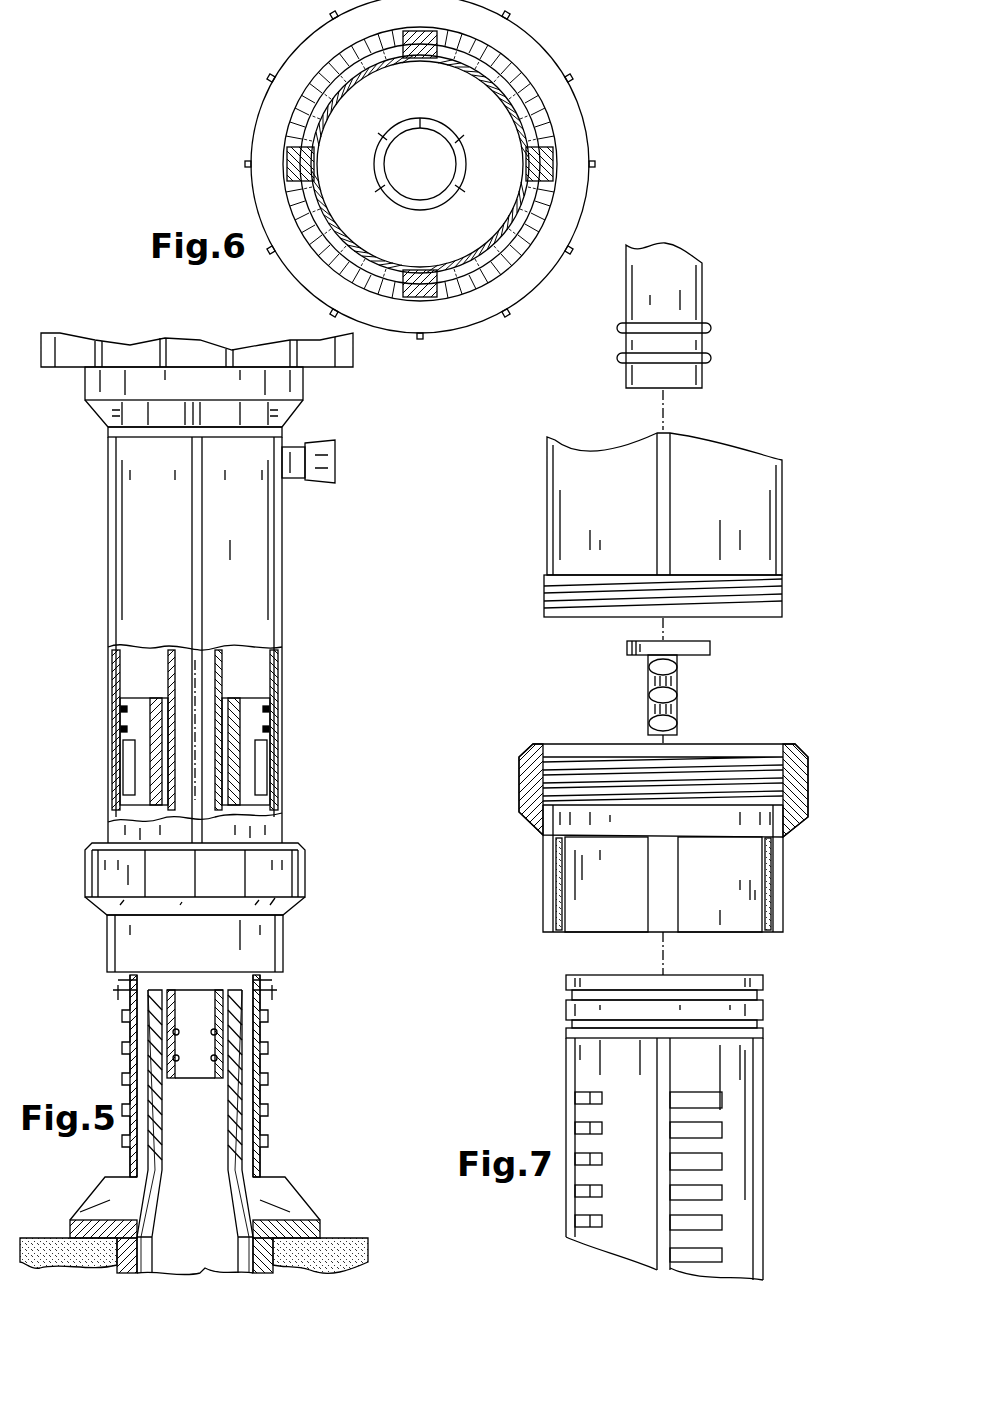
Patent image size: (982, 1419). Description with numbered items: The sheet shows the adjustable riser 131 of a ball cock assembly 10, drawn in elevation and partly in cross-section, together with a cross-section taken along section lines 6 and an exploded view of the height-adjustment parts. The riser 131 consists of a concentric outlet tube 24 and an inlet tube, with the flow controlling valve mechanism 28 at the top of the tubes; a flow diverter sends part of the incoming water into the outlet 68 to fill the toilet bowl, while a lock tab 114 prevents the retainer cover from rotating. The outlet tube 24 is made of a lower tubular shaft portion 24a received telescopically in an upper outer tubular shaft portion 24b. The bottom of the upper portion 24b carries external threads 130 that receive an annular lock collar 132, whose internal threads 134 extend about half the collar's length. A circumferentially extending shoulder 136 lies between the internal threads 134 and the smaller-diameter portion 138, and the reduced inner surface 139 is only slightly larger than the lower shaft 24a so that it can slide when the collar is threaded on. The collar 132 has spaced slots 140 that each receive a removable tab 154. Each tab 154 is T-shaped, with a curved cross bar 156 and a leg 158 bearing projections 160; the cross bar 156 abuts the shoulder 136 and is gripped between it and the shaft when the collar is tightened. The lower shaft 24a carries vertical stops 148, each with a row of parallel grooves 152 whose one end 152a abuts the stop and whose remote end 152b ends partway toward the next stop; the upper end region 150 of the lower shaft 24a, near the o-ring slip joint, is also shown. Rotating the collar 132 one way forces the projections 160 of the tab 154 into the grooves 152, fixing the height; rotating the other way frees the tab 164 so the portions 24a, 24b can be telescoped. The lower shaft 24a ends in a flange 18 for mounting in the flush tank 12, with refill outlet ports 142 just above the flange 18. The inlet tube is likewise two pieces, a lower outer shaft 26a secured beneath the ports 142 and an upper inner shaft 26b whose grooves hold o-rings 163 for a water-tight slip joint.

In FIG. 5, the ball cock assembly 10 is at (340, 759).
In FIG. 5, the flush tank 12 is at (283, 1252).
In FIG. 5, the flange 18 is at (310, 1230).
In FIG. 6, the outlet tube 24 is at (330, 83).
In FIG. 5, the outlet tube 24 is at (235, 830).
In FIG. 5, the lower tubular shaft portion 24a is at (125, 1078).
In FIG. 7, the lower tubular shaft portion 24a is at (765, 1048).
In FIG. 5, the upper outer tubular shaft portion 24b is at (115, 825).
In FIG. 7, the upper outer tubular shaft portion 24b is at (782, 477).
In FIG. 5, the lower outer shaft 26a is at (233, 1153).
In FIG. 6, the upper inner shaft 26b is at (440, 127).
In FIG. 5, the upper inner shaft 26b is at (200, 1072).
In FIG. 7, the upper inner shaft 26b is at (702, 283).
In FIG. 5, the flow controlling valve mechanism 28 is at (52, 382).
In FIG. 5, the outlet 68 is at (322, 484).
In FIG. 7, the lock tab 114 is at (670, 678).
In FIG. 7, the external threads 130 is at (783, 595).
In FIG. 5, the riser 131 is at (348, 848).
In FIG. 6, the annular lock collar 132 is at (525, 15).
In FIG. 5, the annular lock collar 132 is at (303, 867).
In FIG. 7, the annular lock collar 132 is at (800, 790).
In FIG. 7, the internal threads 134 is at (578, 755).
In FIG. 7, the circumferentially extending shoulder 136 is at (723, 835).
In FIG. 7, the smaller-diameter portion of the collar 138 is at (553, 860).
In FIG. 7, the inner surface 139 is at (553, 888).
In FIG. 7, the slots 140 is at (670, 932).
In FIG. 5, the refill outlet ports 142 is at (120, 1210).
In FIG. 7, the vertical stops 148 is at (665, 1077).
In FIG. 7, the rim 150 is at (635, 1037).
In FIG. 7, the grooves 152 is at (677, 1207).
In FIG. 7, the groove end abutting the stop 152a is at (690, 1247).
In FIG. 7, the remote groove end 152b is at (702, 1077).
In FIG. 6, the removable tab 154 is at (402, 38).
In FIG. 7, the removable tab 154 is at (645, 702).
In FIG. 7, the cross bar 156 is at (707, 645).
In FIG. 7, the leg 158 is at (675, 710).
In FIG. 7, the projections 160 is at (653, 683).
In FIG. 5, the o-ring 163 is at (217, 1057).
In FIG. 7, the tab 164 is at (703, 343).
In FIG. 5, the section line 6- 6 is at (75, 943).